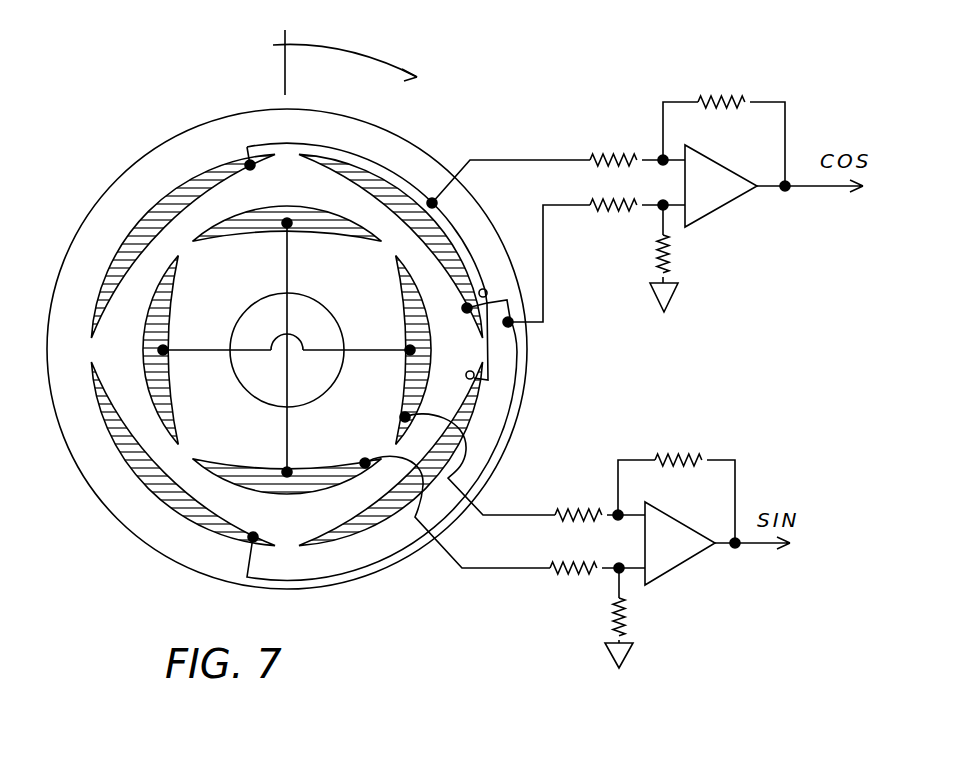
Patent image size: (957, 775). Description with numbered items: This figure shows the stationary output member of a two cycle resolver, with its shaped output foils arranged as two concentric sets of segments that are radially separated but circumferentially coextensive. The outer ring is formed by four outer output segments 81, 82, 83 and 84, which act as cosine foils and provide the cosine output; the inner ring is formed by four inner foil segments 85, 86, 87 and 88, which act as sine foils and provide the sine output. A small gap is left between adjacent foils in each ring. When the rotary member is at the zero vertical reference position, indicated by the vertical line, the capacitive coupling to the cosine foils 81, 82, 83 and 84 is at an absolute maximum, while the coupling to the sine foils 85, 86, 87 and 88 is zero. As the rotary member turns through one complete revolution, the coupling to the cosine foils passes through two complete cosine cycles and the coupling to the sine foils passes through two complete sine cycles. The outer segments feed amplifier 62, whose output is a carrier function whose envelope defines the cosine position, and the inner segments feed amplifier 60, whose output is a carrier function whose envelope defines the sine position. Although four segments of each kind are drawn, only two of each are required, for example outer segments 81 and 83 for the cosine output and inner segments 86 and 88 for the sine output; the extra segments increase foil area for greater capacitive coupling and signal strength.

The outer output segment 81 is at (130, 250).
The outer output segment 82 is at (140, 462).
The outer output segment 83 is at (376, 515).
The outer output segment 84 is at (385, 193).
The inner foil segment 85 is at (170, 418).
The inner foil segment 86 is at (347, 470).
The inner foil segment 87 is at (405, 307).
The inner foil segment 88 is at (263, 225).
The amplifier 60 is at (687, 560).
The amplifier 62 is at (730, 200).